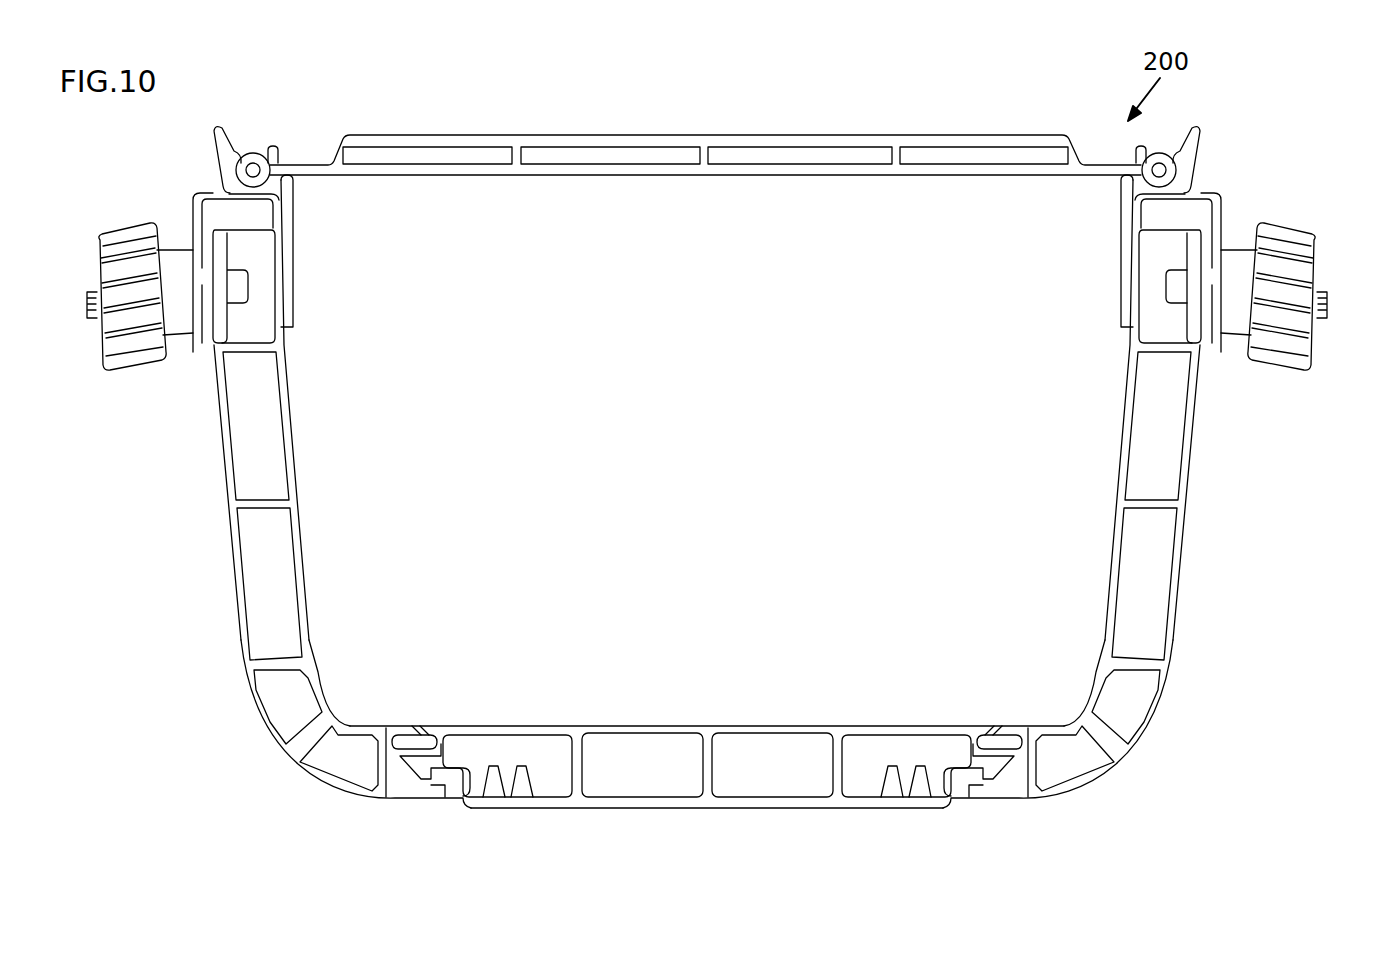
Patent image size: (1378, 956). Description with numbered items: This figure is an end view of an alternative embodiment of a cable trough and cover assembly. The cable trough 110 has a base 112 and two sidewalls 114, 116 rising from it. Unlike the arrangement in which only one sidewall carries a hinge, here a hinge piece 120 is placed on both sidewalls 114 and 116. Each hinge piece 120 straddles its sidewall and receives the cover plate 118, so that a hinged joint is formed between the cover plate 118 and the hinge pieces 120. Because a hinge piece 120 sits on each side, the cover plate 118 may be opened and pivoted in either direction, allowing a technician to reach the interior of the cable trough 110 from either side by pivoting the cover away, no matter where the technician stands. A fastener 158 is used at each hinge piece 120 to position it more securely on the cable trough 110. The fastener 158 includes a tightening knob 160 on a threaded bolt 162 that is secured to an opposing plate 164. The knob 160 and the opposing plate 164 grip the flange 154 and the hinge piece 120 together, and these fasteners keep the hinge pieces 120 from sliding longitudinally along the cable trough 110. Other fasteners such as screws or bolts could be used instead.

The cable trough 110 is at (1110, 775).
The base 112 is at (721, 724).
The sidewall 114 is at (1190, 535).
The sidewall 116 is at (231, 605).
The cover plate 118 is at (719, 137).
The hinge piece 120 is at (195, 195).
The flange 154 is at (1168, 216).
The fastener 158 is at (134, 368).
The tightening knob 160 is at (1306, 227).
The threaded bolt 162 is at (1324, 312).
The opposing plate 164 is at (1196, 240).